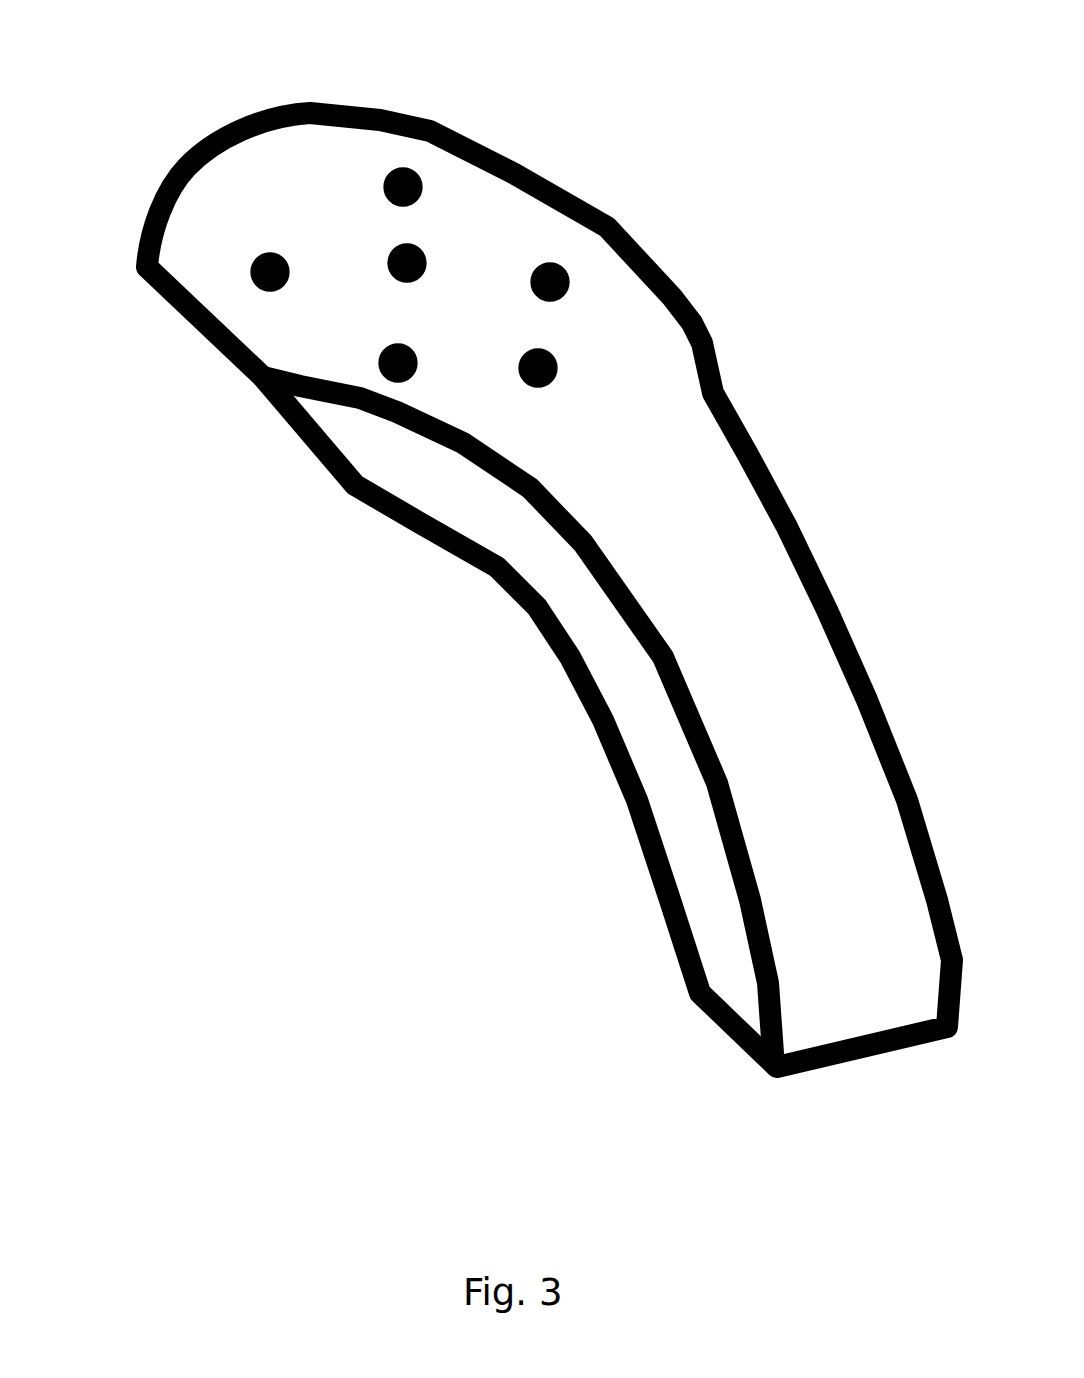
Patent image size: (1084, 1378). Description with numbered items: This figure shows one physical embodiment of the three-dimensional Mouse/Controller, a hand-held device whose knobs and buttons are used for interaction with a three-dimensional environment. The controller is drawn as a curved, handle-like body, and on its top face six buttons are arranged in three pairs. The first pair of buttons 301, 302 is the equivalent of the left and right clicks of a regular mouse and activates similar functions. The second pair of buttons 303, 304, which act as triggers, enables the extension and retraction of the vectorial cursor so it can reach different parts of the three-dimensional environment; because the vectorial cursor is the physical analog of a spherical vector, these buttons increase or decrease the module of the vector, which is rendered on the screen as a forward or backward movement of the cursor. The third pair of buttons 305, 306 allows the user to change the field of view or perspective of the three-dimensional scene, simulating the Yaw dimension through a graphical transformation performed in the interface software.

The button 301 is at (418, 172).
The button 302 is at (255, 262).
The button (trigger) 303 is at (423, 258).
The button (trigger) 304 is at (534, 380).
The button 305 is at (380, 361).
The button 306 is at (565, 275).